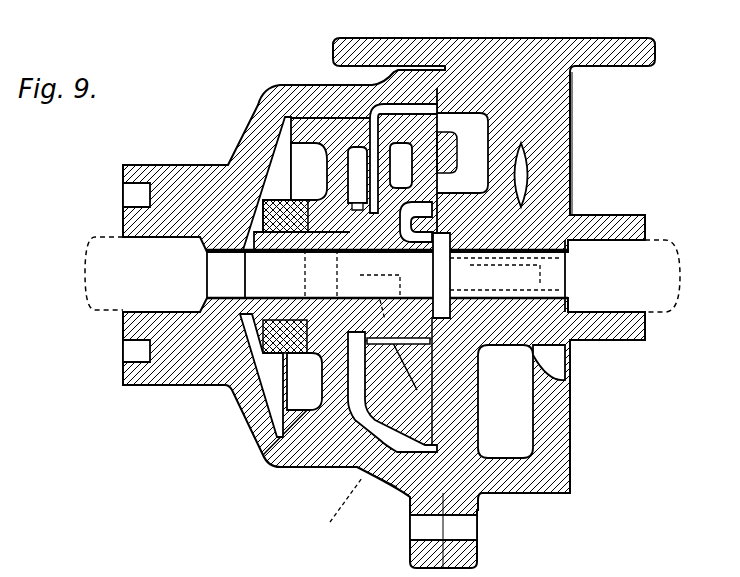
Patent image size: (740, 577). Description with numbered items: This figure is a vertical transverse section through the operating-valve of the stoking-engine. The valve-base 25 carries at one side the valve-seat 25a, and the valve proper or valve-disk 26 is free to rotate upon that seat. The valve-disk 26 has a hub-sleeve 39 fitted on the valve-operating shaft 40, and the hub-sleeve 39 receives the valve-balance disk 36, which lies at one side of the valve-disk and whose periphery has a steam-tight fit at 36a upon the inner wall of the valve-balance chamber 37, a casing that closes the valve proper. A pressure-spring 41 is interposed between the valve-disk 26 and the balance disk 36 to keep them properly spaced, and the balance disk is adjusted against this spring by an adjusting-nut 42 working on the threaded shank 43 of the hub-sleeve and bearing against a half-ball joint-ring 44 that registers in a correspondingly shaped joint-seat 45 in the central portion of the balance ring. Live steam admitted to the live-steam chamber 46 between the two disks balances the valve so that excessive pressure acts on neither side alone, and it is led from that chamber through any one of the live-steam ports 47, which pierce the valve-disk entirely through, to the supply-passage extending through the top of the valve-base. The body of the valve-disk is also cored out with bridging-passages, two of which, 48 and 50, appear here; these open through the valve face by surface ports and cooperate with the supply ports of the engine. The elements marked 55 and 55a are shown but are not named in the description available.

The valve-base 25 is at (488, 497).
The valve-seat 25a is at (573, 110).
The valve-disk 26 is at (388, 482).
The valve-balance disk 36 is at (272, 463).
The steam-tight fit 36a is at (352, 480).
The valve-balance chamber 37 is at (238, 383).
The hub-sleeve 39 is at (387, 260).
The valve-operating shaft 40 is at (101, 316).
The pressure-spring 41 is at (309, 171).
The adjusting-nut 42 is at (275, 183).
The threaded shank 43 is at (412, 285).
The half-ball joint-ring 44 is at (273, 375).
The joint-seat 45 is at (304, 381).
The live-steam chamber 46 is at (335, 110).
The live-steam ports 47 is at (333, 78).
The bridging-passage 48 is at (398, 150).
The bridging-passage 50 is at (334, 511).
The ball 55 is at (516, 140).
The ball cavity 55a is at (462, 153).